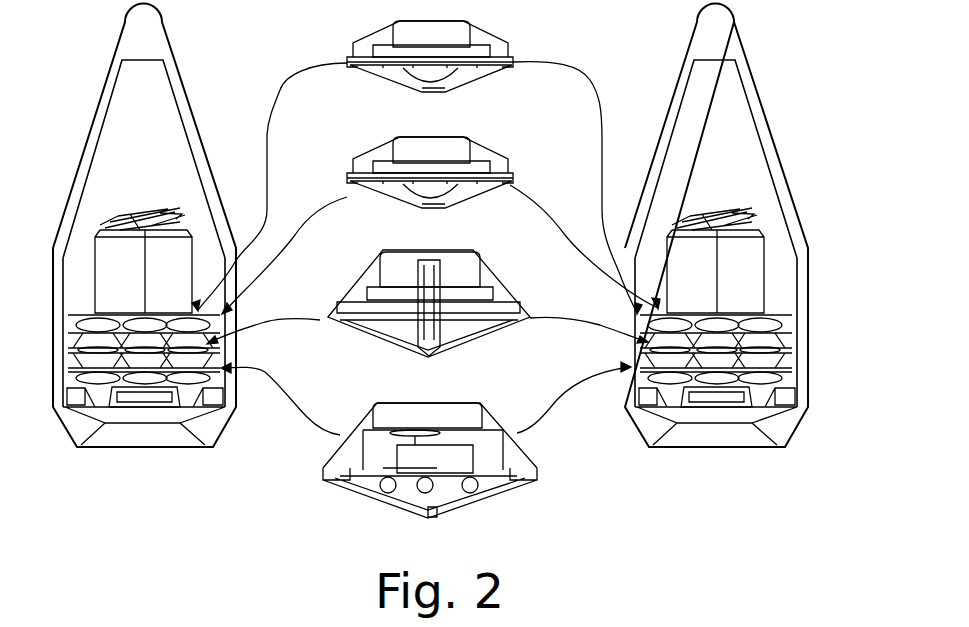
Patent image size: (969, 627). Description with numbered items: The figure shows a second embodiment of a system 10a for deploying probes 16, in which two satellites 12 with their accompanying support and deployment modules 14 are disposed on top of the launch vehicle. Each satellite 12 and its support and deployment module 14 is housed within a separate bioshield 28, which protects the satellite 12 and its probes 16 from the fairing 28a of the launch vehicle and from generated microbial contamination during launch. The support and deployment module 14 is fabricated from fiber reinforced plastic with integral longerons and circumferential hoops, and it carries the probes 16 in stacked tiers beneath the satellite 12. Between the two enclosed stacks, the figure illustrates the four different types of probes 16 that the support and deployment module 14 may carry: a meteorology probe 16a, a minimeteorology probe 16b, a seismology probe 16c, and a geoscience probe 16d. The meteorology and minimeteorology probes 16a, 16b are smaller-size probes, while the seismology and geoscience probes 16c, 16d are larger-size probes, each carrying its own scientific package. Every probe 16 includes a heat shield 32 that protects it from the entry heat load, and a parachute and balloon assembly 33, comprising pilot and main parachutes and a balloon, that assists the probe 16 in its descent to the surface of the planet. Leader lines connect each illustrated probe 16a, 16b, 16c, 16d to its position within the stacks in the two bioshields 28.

The system for deploying probes 10a is at (742, 285).
The satellite 12 is at (147, 201).
The support and deployment module 14 is at (247, 352).
The probes 16 is at (783, 365).
The meteorology probe 16a is at (338, 43).
The minimeteorology probe 16b is at (340, 148).
The seismology probe 16c is at (335, 288).
The geoscience probe 16d is at (322, 457).
The bioshield 28 is at (724, 226).
The fairing 28a is at (750, 62).
The heat shield 32 is at (513, 45).
The parachute and balloon assembly 33 is at (455, 33).